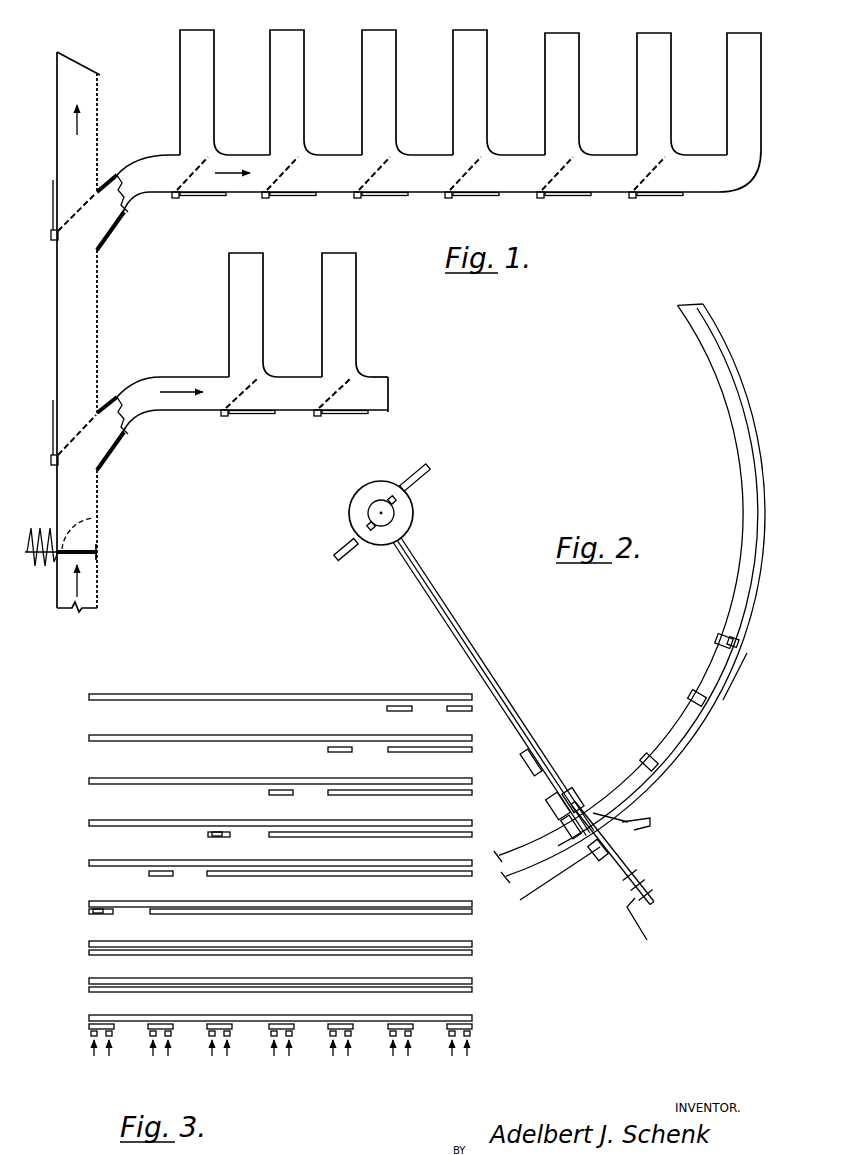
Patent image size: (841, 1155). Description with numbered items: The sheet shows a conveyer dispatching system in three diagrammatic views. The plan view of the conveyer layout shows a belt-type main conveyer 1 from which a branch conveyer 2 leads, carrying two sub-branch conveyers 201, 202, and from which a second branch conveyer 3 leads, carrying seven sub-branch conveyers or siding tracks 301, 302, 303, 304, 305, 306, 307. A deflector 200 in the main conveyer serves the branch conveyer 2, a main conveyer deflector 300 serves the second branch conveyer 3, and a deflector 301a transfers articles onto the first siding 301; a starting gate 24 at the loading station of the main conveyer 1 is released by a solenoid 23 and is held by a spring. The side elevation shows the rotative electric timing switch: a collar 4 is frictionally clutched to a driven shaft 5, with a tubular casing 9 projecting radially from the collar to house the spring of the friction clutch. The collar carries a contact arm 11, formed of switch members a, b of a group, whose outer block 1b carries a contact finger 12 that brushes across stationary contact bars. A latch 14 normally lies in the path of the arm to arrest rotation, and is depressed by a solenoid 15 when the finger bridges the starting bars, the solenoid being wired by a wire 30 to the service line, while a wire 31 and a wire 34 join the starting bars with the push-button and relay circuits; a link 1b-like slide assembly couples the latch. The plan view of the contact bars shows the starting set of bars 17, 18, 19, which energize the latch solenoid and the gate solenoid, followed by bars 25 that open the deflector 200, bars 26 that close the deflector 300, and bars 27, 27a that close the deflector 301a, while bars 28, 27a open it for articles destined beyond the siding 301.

In FIG. 1, the main conveyer 1 is at (83, 338).
In FIG. 1, the branch conveyer 2 is at (242, 423).
In FIG. 1, the second branch conveyer 3 is at (431, 184).
In FIG. 2, the collar 4 is at (417, 516).
In FIG. 2, the shaft 5 is at (385, 498).
In FIG. 2, the tubular casing 9 is at (427, 475).
In FIG. 2, the contact carrying arm 11 is at (488, 667).
In FIG. 2, the arm guide block 1b is at (531, 753).
In FIG. 2, the contact finger 12 is at (582, 799).
In FIG. 2, the latch 14 is at (623, 851).
In FIG. 2, the solenoid 15 is at (648, 873).
In FIG. 2, the stationary contact bar 17 is at (508, 862).
In FIG. 3, the stationary contact bar 17 is at (92, 1038).
In FIG. 2, the stationary contact bar 18 is at (594, 812).
In FIG. 3, the stationary contact bar 18 is at (90, 1028).
In FIG. 2, the stationary contact bar 19 is at (628, 822).
In FIG. 3, the stationary contact bar 19 is at (456, 1016).
In FIG. 1, the solenoid 23 is at (40, 566).
In FIG. 1, the starting gate 24 is at (79, 549).
In FIG. 2, the stationary switch bars 25 is at (668, 776).
In FIG. 3, the stationary switch bars 25 is at (140, 981).
In FIG. 2, the stationary contact bars 26 is at (714, 714).
In FIG. 3, the stationary contact bars 26 is at (163, 941).
In FIG. 2, the stationary contact bar 27 is at (712, 652).
In FIG. 3, the stationary contact bar 27 is at (210, 834).
In FIG. 2, the common contact bar 27a is at (716, 640).
In FIG. 3, the common contact bar 27a is at (212, 819).
In FIG. 3, the stationary contact bar 28 is at (297, 837).
In FIG. 2, the wire 30 is at (648, 933).
In FIG. 2, the wire 31 is at (550, 888).
In FIG. 2, the wire 34 is at (583, 870).
In FIG. 1, the deflector 200 is at (53, 422).
In FIG. 3, the deflector 200 is at (254, 985).
In FIG. 1, the sub-branch conveyer 201 is at (254, 320).
In FIG. 1, the sub-branch conveyer 202 is at (356, 307).
In FIG. 1, the main conveyer deflector 300 is at (54, 197).
In FIG. 3, the main conveyer deflector 300 is at (254, 947).
In FIG. 1, the sub-branch conveyer 301 is at (214, 109).
In FIG. 3, the sub-branch conveyer 301 is at (256, 907).
In FIG. 1, the deflector 301a is at (202, 196).
In FIG. 1, the sub-branch conveyer 302 is at (293, 94).
In FIG. 3, the sub-branch conveyer 302 is at (254, 865).
In FIG. 1, the sub-branch conveyer 303 is at (385, 88).
In FIG. 3, the sub-branch conveyer 303 is at (254, 825).
In FIG. 1, the sub-branch conveyer 304 is at (478, 85).
In FIG. 3, the sub-branch conveyer 304 is at (254, 783).
In FIG. 1, the sub-branch conveyer 305 is at (567, 87).
In FIG. 3, the sub-branch conveyer 305 is at (254, 741).
In FIG. 1, the sub-branch conveyer 306 is at (657, 82).
In FIG. 3, the sub-branch conveyer 306 is at (254, 887).
In FIG. 1, the sub-branch conveyer 307 is at (752, 100).
In FIG. 3, the sub-branch conveyer 307 is at (465, 1067).
In FIG. 2, the rotating timing switch member a is at (462, 634).
In FIG. 3, the rotating timing switch member a is at (92, 1069).
In FIG. 2, the rotating timing switch member b is at (453, 643).
In FIG. 3, the rotating timing switch member b is at (118, 1069).